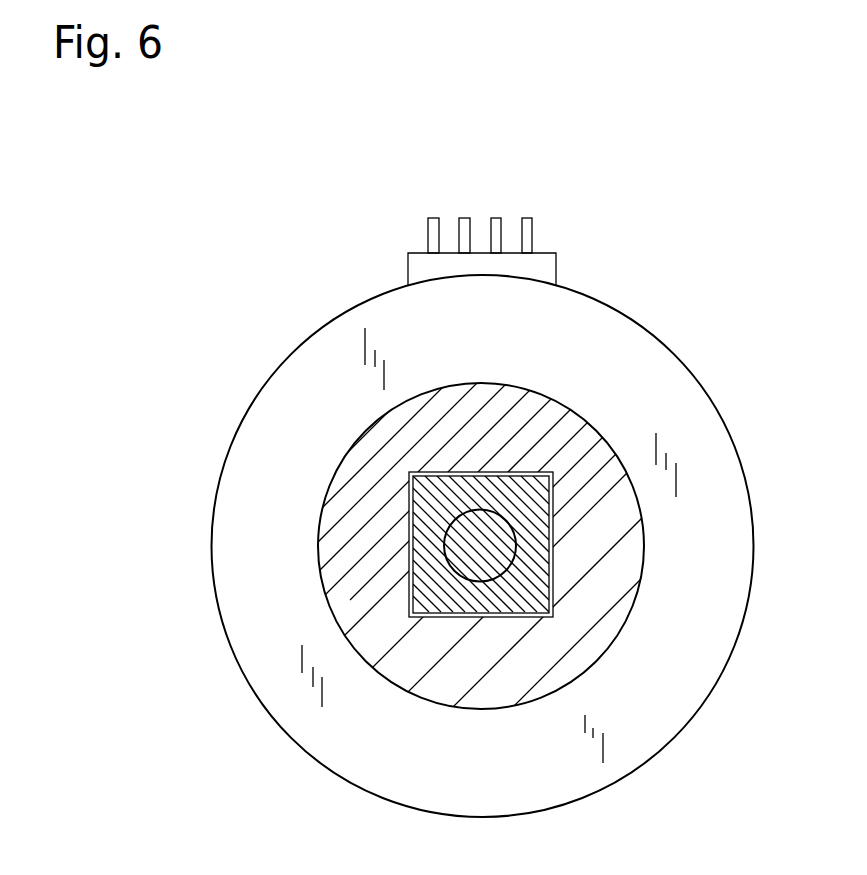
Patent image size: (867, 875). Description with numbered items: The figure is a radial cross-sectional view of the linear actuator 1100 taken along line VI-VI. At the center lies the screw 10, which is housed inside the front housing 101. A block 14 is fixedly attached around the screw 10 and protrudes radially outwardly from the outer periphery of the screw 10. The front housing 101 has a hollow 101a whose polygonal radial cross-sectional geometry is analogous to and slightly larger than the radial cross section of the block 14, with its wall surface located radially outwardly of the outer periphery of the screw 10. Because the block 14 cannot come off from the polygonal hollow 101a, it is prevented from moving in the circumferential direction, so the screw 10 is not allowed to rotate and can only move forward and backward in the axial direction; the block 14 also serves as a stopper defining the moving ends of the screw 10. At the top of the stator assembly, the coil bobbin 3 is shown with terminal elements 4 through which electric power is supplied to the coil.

The linear actuator 1100 is at (222, 176).
The front housing 101 is at (420, 673).
The hollow 101a is at (412, 583).
The block 14 is at (438, 503).
The screw 10 is at (478, 552).
The coil bobbin 3 is at (420, 267).
The terminal elements 4 is at (495, 218).